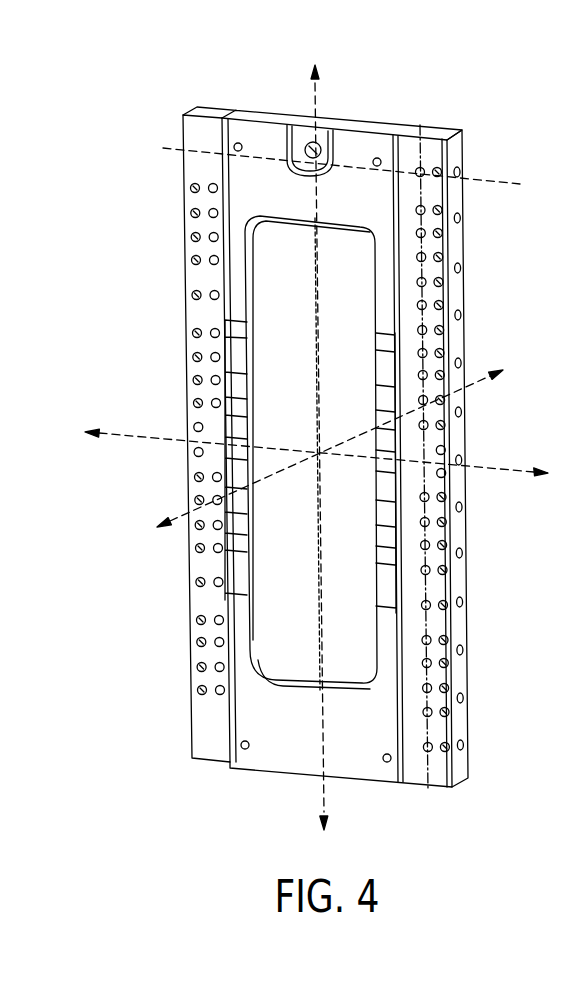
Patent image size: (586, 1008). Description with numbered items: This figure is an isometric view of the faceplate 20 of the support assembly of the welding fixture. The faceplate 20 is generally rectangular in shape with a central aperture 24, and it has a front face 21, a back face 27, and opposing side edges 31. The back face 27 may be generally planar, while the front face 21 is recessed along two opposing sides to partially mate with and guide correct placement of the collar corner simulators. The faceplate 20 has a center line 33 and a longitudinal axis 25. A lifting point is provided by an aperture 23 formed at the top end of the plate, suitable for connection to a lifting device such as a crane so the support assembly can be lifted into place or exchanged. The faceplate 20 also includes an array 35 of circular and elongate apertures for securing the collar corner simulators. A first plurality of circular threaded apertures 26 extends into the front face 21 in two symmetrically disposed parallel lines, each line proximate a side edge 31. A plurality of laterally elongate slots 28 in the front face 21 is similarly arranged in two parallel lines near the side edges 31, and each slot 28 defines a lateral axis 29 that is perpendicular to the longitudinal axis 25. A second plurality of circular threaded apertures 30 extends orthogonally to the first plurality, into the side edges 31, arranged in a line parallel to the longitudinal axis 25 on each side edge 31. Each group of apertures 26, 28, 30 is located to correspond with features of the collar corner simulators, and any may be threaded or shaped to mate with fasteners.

The faceplate 20 is at (109, 87).
The front face 21 is at (152, 318).
The aperture 23 is at (310, 148).
The central aperture 24 is at (282, 503).
The longitudinal axis 25 is at (322, 101).
The circular threaded apertures 26 is at (220, 664).
The back face 27 is at (493, 315).
The laterally elongate slots 28 is at (199, 665).
The lateral axis 29 is at (465, 178).
The circular threaded apertures 30 is at (463, 746).
The side edges 31 is at (465, 626).
The center line 33 is at (498, 472).
The array 35 is at (480, 161).